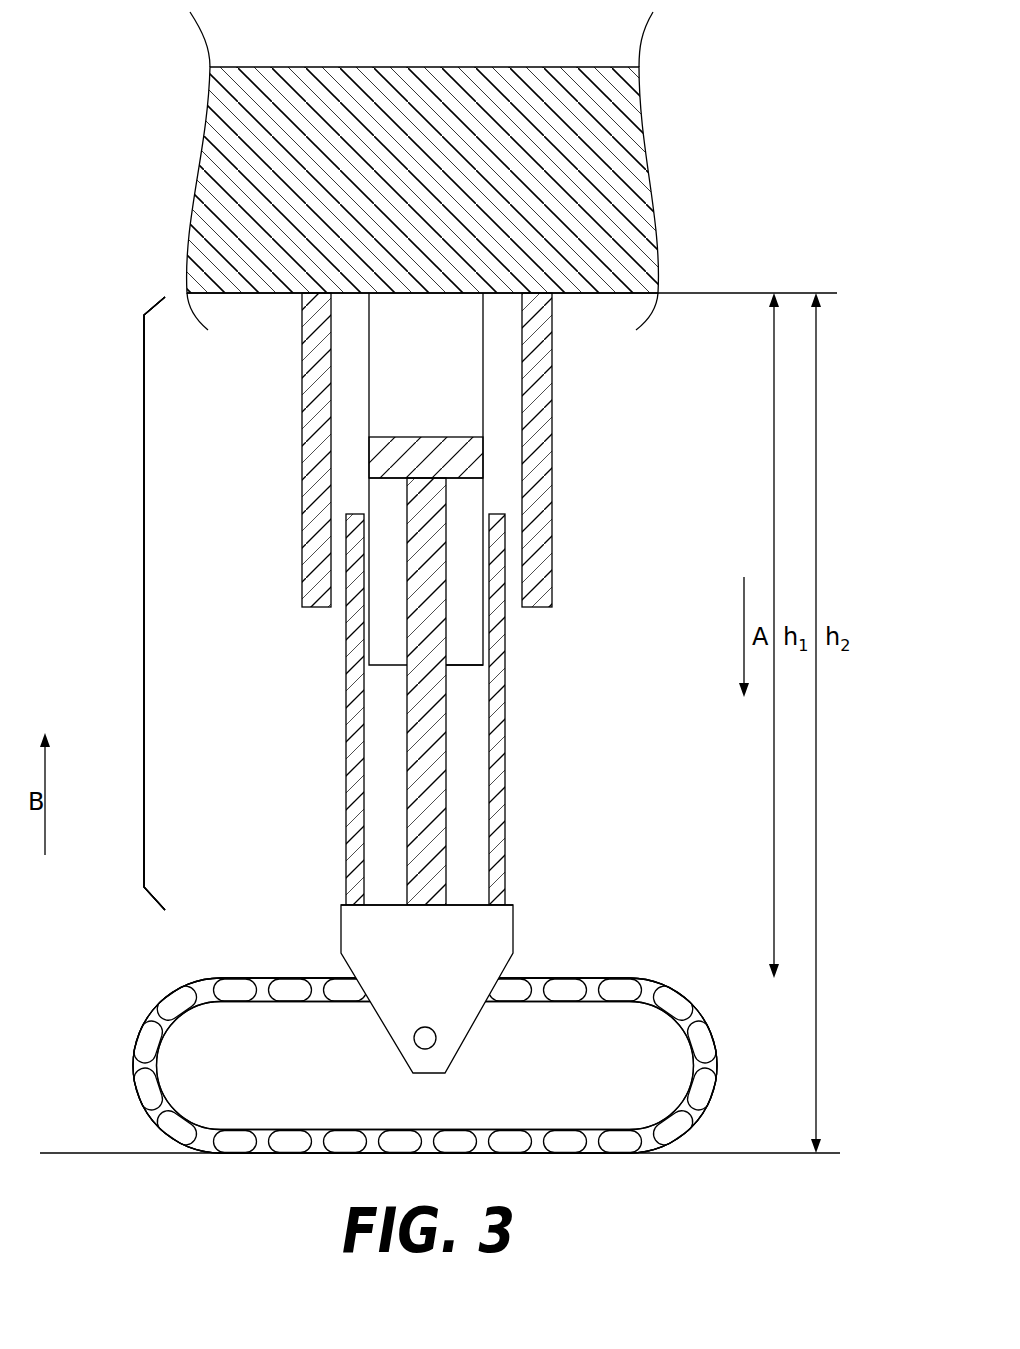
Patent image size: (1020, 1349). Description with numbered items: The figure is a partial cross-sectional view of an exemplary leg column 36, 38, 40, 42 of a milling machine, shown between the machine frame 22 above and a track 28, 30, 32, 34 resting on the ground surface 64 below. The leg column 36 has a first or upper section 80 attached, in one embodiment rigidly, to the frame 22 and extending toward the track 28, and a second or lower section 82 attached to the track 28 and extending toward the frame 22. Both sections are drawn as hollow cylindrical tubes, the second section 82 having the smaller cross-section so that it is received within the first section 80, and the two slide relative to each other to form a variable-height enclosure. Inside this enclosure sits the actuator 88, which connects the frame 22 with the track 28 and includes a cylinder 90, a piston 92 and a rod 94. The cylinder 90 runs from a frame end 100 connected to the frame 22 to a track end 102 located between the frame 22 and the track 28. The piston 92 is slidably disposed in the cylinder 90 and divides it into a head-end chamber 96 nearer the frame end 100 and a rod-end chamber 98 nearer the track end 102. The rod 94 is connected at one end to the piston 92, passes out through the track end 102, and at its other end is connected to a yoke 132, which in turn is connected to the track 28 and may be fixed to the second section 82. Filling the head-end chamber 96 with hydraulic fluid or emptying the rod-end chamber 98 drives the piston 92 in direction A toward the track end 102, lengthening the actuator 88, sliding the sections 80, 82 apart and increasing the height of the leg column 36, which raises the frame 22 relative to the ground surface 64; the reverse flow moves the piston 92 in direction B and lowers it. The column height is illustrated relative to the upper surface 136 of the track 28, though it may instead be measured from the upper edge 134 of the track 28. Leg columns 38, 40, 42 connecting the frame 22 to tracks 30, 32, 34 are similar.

The frame 22 is at (441, 196).
The frame end 100 is at (457, 281).
The ground surface 64 is at (737, 1155).
The track 28 is at (710, 1065).
The track 30 is at (425, 1065).
The track 32 is at (425, 1066).
The track 34 is at (425, 1065).
The upper surface 136 is at (562, 975).
The leg column 36 is at (144, 633).
The leg column 38 is at (154, 603).
The leg column 40 is at (154, 603).
The leg column 42 is at (154, 603).
The actuator 88 is at (358, 401).
The first section 80 is at (542, 384).
The head-end chamber 96 is at (441, 382).
The cylinder 90 is at (485, 413).
The piston 92 is at (463, 460).
The rod 94 is at (433, 762).
The rod-end chamber 98 is at (380, 618).
The second section 82 is at (497, 820).
The track end 102 is at (468, 674).
The yoke 132 is at (513, 930).
The upper edge 134 is at (472, 903).